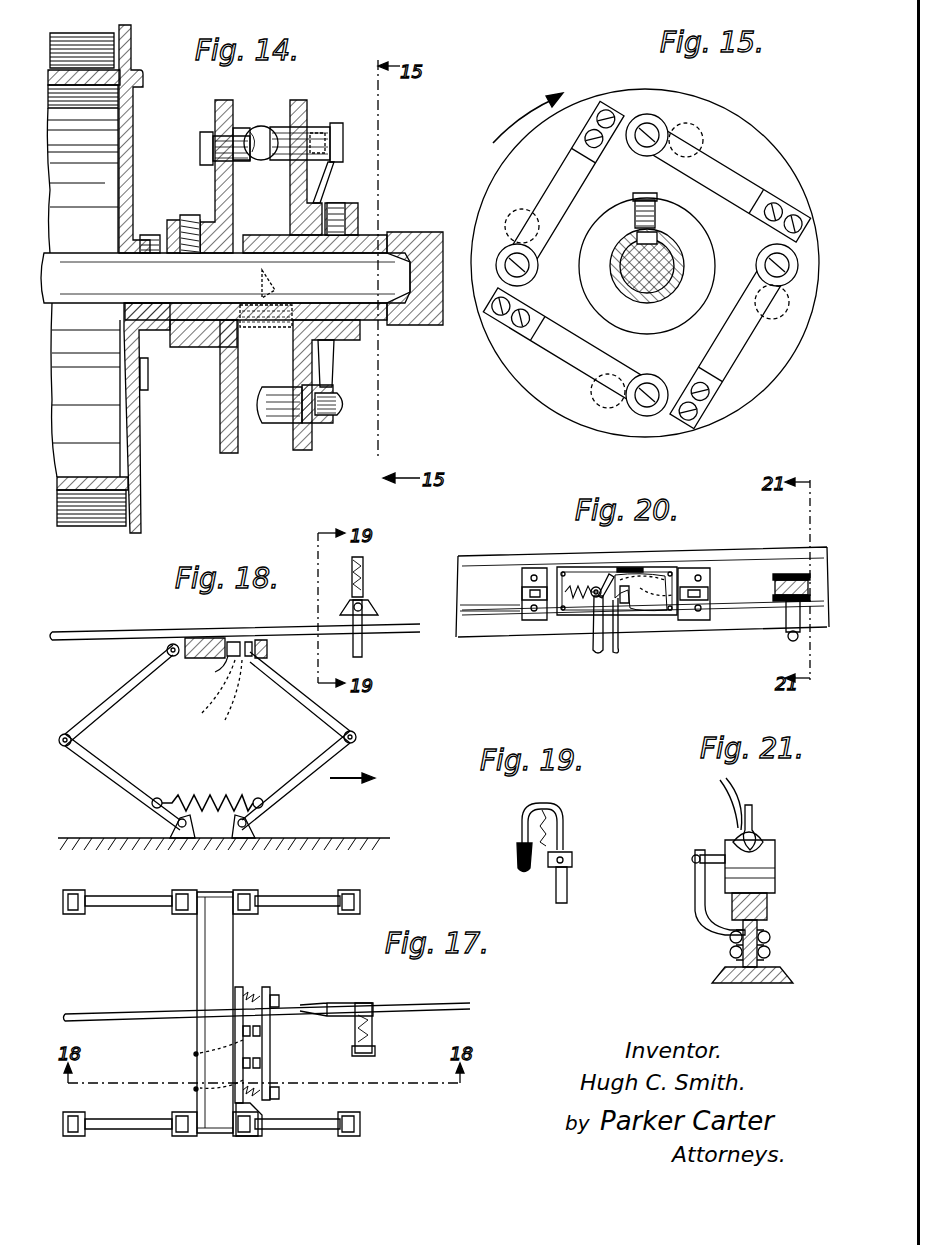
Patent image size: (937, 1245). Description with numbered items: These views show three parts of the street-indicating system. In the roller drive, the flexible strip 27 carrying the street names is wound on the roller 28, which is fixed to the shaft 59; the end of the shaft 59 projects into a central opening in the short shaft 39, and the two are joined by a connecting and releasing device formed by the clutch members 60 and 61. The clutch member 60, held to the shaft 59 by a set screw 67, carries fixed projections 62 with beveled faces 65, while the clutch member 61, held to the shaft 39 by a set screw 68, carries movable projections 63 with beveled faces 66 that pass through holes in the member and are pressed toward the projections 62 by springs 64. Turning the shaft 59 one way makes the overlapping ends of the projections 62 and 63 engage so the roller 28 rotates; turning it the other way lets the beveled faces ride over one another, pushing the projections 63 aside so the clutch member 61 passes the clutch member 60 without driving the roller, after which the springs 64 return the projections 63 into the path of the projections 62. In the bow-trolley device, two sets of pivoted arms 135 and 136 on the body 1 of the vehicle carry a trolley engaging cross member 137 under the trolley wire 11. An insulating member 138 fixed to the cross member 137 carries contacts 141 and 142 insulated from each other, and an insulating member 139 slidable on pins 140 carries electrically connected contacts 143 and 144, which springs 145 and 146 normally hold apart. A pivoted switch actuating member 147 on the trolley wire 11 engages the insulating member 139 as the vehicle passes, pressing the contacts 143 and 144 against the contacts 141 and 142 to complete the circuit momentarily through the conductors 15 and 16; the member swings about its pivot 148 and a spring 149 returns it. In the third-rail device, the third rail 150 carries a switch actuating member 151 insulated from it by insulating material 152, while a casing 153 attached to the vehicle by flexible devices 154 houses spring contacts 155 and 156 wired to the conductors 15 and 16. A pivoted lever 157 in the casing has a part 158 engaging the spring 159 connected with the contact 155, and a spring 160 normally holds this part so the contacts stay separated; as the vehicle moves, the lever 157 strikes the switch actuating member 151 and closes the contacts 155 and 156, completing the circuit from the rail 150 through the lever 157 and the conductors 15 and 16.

In FIG. 18, the body 1 is at (342, 836).
In FIG. 18, the trolley wire 11 is at (118, 630).
In FIG. 19, the trolley wire 11 is at (524, 872).
In FIG. 17, the trolley wire 11 is at (95, 1014).
In FIG. 18, the conductor 15 is at (200, 715).
In FIG. 20, the conductor 15 is at (660, 580).
In FIG. 21, the conductor 15 is at (721, 783).
In FIG. 17, the conductor 15 is at (194, 1055).
In FIG. 18, the conductor 16 is at (226, 722).
In FIG. 20, the conductor 16 is at (674, 594).
In FIG. 21, the conductor 16 is at (729, 783).
In FIG. 17, the conductor 16 is at (170, 1097).
In FIG. 14, the flexible strip 27 is at (114, 530).
In FIG. 14, the roller 28 is at (84, 500).
In FIG. 14, the shaft 39 is at (412, 235).
In FIG. 15, the shaft 39 is at (675, 252).
In FIG. 14, the shaft 59 is at (77, 263).
In FIG. 15, the shaft 59 is at (632, 262).
In FIG. 14, the clutch member 60 is at (224, 100).
In FIG. 14, the clutch member 61 is at (298, 100).
In FIG. 15, the clutch member 61 is at (765, 152).
In FIG. 14, the projections 62 is at (240, 134).
In FIG. 15, the projections 62 is at (690, 125).
In FIG. 14, the movable projections 63 is at (300, 125).
In FIG. 15, the movable projections 63 is at (645, 113).
In FIG. 14, the springs 64 is at (332, 175).
In FIG. 15, the springs 64 is at (718, 168).
In FIG. 14, the beveled faces 65 is at (248, 160).
In FIG. 14, the beveled faces 66 is at (262, 127).
In FIG. 14, the set screw 67 is at (188, 218).
In FIG. 14, the set screw 68 is at (345, 205).
In FIG. 15, the set screw 68 is at (642, 194).
In FIG. 18, the pivoted arms 135 is at (100, 715).
In FIG. 17, the pivoted arms 135 is at (120, 1130).
In FIG. 17, the pivoted arms 136 is at (120, 906).
In FIG. 18, the trolley engaging cross member 137 is at (200, 640).
In FIG. 17, the trolley engaging cross member 137 is at (200, 950).
In FIG. 18, the insulating member 138 is at (230, 660).
In FIG. 17, the insulating member 138 is at (240, 987).
In FIG. 18, the insulating member 139 is at (268, 650).
In FIG. 17, the insulating member 139 is at (266, 990).
In FIG. 17, the pins 140 is at (280, 1000).
In FIG. 17, the contact 141 is at (243, 1030).
In FIG. 18, the contact 142 is at (232, 642).
In FIG. 17, the contact 142 is at (243, 1062).
In FIG. 17, the contact 143 is at (261, 1030).
In FIG. 18, the contact 144 is at (249, 642).
In FIG. 17, the contact 144 is at (261, 1062).
In FIG. 17, the spring 145 is at (250, 992).
In FIG. 17, the spring 146 is at (258, 1122).
In FIG. 18, the switch actuating member 147 is at (363, 650).
In FIG. 19, the switch actuating member 147 is at (568, 885).
In FIG. 17, the switch actuating member 147 is at (373, 1035).
In FIG. 18, the pivot 148 is at (365, 607).
In FIG. 19, the pivot 148 is at (572, 858).
In FIG. 17, the pivot 148 is at (376, 1052).
In FIG. 18, the spring 149 is at (364, 580).
In FIG. 19, the spring 149 is at (560, 822).
In FIG. 20, the third rail 150 is at (492, 578).
In FIG. 21, the third rail 150 is at (770, 905).
In FIG. 20, the switch actuating member 151 is at (792, 641).
In FIG. 21, the switch actuating member 151 is at (698, 895).
In FIG. 20, the insulating material 152 is at (788, 573).
In FIG. 21, the insulating material 152 is at (735, 940).
In FIG. 20, the casing 153 is at (683, 612).
In FIG. 21, the casing 153 is at (776, 855).
In FIG. 20, the flexible devices 154 is at (532, 577).
In FIG. 21, the flexible devices 154 is at (754, 808).
In FIG. 20, the contact 155 is at (616, 620).
In FIG. 20, the contact 156 is at (624, 605).
In FIG. 20, the pivoted lever 157 is at (597, 645).
In FIG. 21, the pivoted lever 157 is at (692, 862).
In FIG. 20, the part 158 is at (610, 578).
In FIG. 20, the spring 159 is at (598, 586).
In FIG. 20, the spring 160 is at (577, 600).